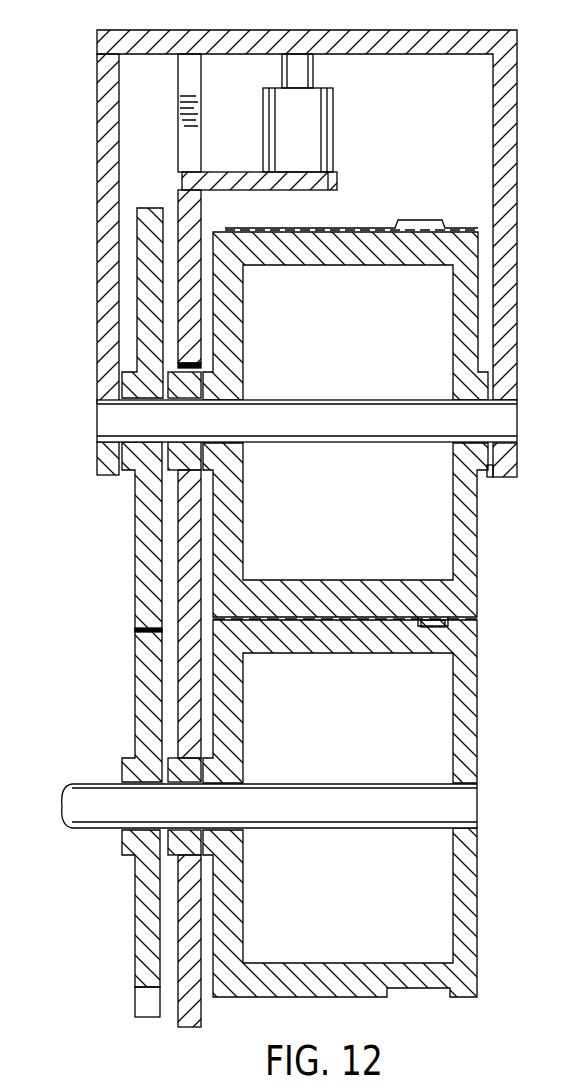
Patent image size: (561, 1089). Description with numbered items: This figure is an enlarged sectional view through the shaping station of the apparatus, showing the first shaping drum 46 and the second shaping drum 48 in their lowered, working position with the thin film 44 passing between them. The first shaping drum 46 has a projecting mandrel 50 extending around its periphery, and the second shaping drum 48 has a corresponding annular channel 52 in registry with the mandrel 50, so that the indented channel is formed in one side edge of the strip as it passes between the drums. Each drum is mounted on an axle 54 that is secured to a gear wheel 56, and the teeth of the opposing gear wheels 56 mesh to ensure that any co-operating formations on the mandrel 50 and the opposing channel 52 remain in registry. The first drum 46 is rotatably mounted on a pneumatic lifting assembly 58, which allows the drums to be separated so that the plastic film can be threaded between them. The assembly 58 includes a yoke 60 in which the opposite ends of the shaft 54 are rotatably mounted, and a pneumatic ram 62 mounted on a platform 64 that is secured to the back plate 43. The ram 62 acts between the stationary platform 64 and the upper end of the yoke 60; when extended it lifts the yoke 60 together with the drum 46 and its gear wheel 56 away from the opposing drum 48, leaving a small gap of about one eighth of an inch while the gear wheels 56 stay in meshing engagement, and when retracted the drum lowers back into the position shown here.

The supporting frame 43 is at (182, 506).
The thin film 44 is at (335, 228).
The first shaping drum 46 is at (478, 530).
The second shaping drum 48 is at (470, 893).
The mandrel 50 is at (435, 617).
The annular channel 52 is at (433, 628).
The axle 54 is at (328, 410).
The gear wheel 56 is at (145, 285).
The pneumatic lifting assembly 58 is at (521, 129).
The yoke 60 is at (103, 185).
The pneumatic ram 62 is at (318, 123).
The platform 64 is at (335, 175).